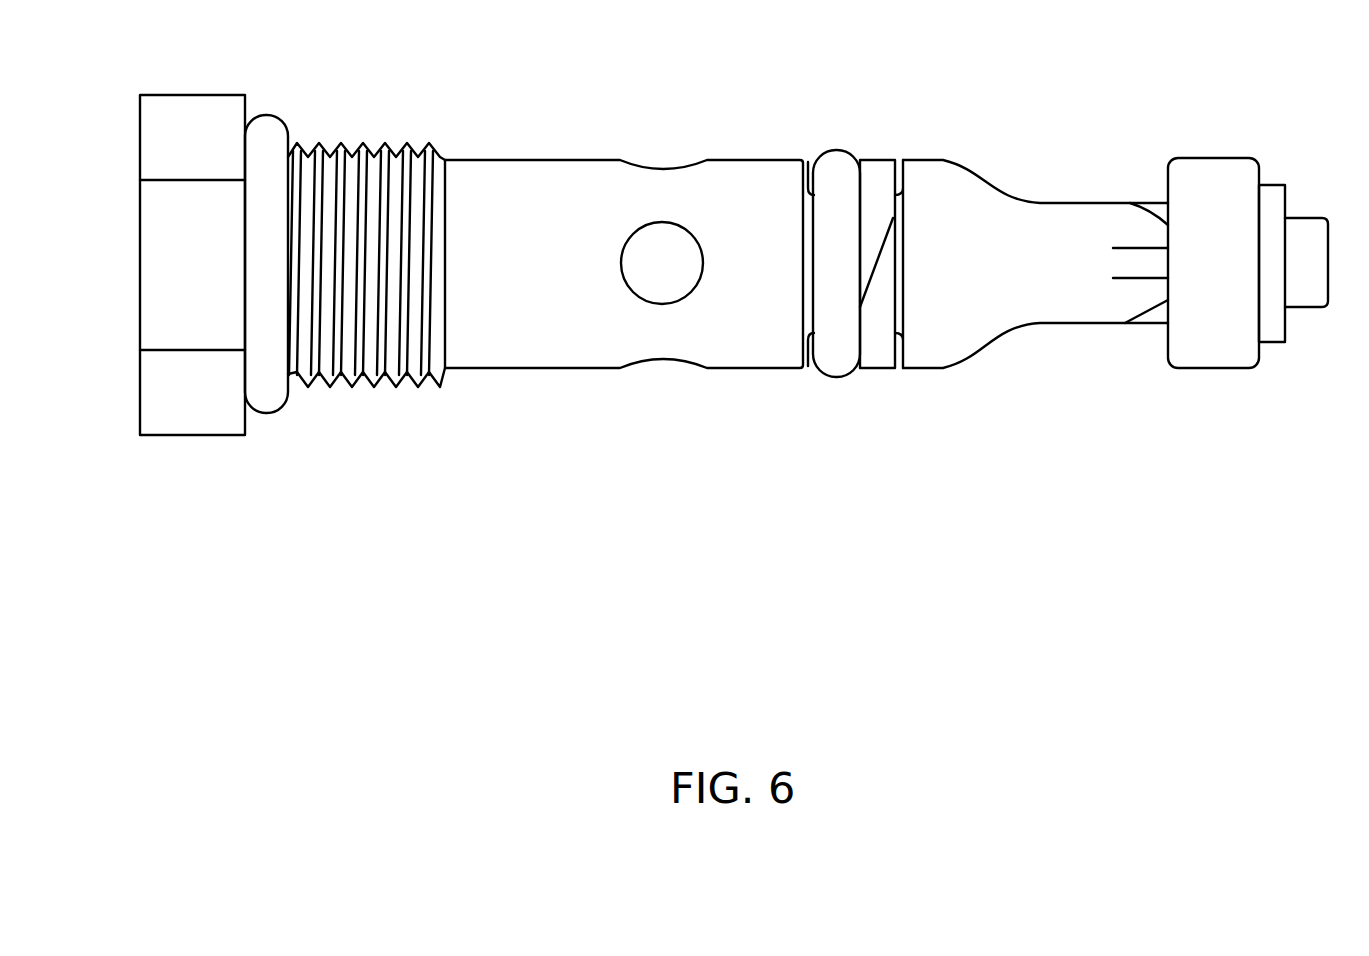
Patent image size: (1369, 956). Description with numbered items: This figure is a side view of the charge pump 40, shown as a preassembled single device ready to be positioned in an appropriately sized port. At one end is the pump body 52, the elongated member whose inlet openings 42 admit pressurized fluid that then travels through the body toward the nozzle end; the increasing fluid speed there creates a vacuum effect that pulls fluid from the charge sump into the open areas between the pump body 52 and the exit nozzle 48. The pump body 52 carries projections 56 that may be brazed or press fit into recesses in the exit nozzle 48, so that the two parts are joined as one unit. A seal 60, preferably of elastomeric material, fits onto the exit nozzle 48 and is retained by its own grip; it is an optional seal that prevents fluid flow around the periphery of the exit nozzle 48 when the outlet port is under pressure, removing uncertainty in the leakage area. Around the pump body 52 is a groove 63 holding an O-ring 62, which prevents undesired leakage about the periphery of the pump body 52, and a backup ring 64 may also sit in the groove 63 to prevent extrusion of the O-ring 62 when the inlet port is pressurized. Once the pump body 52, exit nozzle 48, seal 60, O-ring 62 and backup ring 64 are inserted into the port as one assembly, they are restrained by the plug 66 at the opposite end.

The charge pump 40 is at (1078, 98).
The inlet openings 42 is at (704, 263).
The exit nozzle 48 is at (1233, 275).
The pump body 52 is at (546, 277).
The projections 56 is at (1152, 262).
The seal 60 is at (1272, 342).
The O-ring 62 is at (838, 150).
The groove 63 is at (807, 333).
The backup ring 64 is at (878, 160).
The plug 66 is at (140, 265).